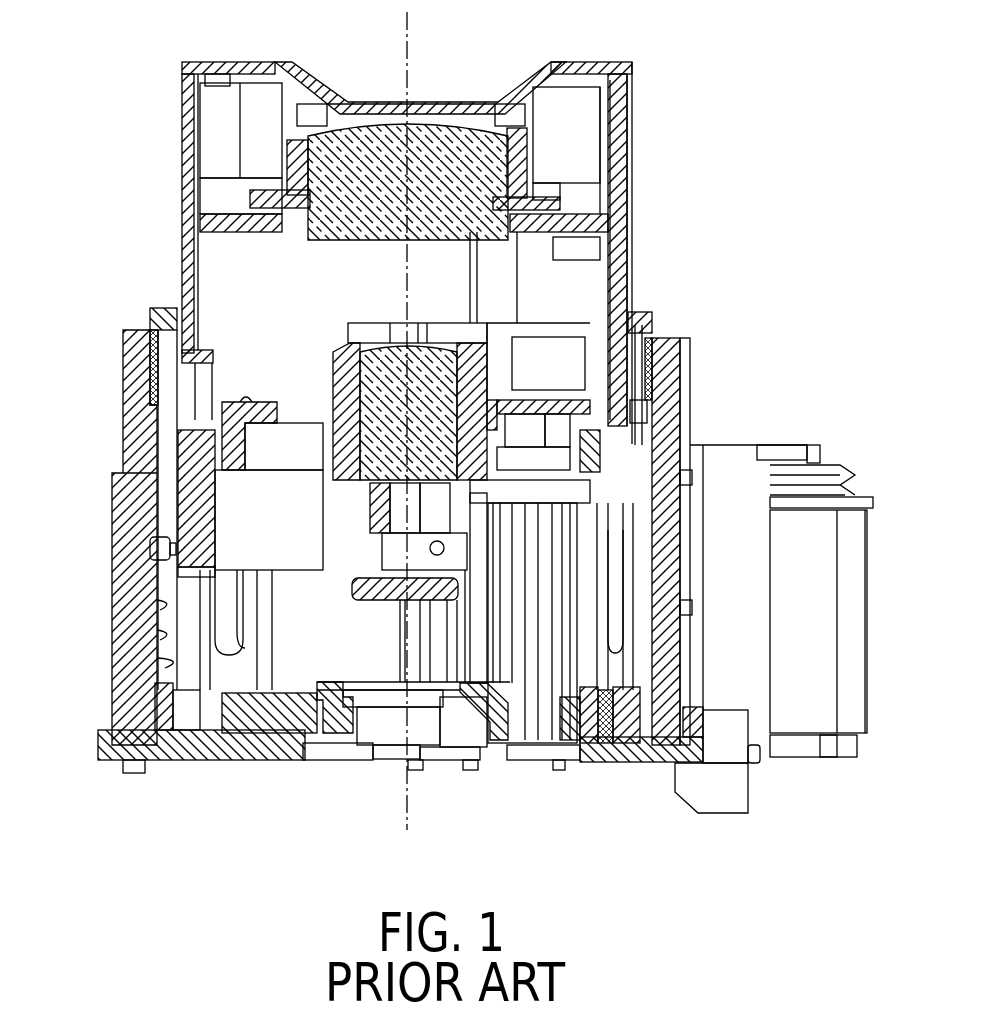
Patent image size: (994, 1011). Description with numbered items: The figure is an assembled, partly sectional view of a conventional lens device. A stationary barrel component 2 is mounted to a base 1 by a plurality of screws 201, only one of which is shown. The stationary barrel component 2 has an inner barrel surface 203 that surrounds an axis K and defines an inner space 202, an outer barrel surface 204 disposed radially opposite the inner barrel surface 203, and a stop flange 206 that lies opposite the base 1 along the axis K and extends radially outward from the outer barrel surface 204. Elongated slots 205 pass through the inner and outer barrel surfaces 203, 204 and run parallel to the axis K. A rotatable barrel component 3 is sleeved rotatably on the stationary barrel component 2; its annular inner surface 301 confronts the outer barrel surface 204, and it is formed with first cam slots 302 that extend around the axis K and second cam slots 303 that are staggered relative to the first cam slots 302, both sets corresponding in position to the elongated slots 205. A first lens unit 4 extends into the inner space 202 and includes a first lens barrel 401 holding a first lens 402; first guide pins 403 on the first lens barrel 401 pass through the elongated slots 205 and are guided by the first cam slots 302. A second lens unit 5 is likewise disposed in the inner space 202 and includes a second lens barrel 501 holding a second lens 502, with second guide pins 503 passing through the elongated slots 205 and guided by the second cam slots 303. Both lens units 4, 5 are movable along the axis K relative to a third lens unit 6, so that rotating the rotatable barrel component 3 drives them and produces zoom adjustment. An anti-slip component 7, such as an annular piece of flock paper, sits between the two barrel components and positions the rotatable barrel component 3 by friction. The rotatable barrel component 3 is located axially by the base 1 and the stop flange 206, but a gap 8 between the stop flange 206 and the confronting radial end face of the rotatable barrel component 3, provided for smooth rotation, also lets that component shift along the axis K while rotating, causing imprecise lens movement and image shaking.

The base 1 is at (226, 772).
The stationary barrel component 2 is at (158, 752).
The rotatable barrel component 3 is at (100, 588).
The first lens unit 4 is at (642, 183).
The second lens unit 5 is at (532, 385).
The third lens unit 6 is at (380, 612).
The anti-slip component 7 is at (662, 349).
The gap 8 is at (150, 332).
The screw 201 is at (606, 724).
The inner space 202 is at (277, 698).
The inner barrel surface 203 is at (187, 661).
The outer barrel surface 204 is at (165, 604).
The elongated slot 205 is at (167, 635).
The stop flange 206 is at (150, 314).
The annular inner surface 301 is at (137, 470).
The first cam slot 302 is at (654, 416).
The second cam slot 303 is at (155, 547).
The first lens barrel 401 is at (617, 130).
The first lens 402 is at (437, 124).
The first guide pin 403 is at (637, 440).
The second lens barrel 501 is at (234, 410).
The second lens 502 is at (382, 345).
The second guide pin 503 is at (165, 538).
The axis K is at (426, 750).